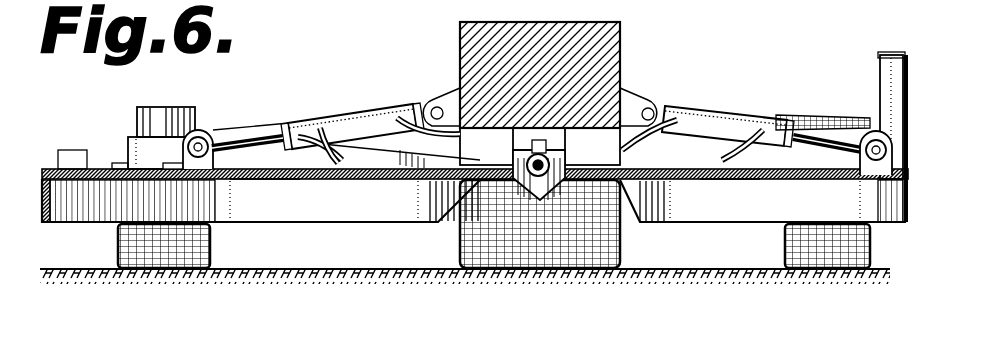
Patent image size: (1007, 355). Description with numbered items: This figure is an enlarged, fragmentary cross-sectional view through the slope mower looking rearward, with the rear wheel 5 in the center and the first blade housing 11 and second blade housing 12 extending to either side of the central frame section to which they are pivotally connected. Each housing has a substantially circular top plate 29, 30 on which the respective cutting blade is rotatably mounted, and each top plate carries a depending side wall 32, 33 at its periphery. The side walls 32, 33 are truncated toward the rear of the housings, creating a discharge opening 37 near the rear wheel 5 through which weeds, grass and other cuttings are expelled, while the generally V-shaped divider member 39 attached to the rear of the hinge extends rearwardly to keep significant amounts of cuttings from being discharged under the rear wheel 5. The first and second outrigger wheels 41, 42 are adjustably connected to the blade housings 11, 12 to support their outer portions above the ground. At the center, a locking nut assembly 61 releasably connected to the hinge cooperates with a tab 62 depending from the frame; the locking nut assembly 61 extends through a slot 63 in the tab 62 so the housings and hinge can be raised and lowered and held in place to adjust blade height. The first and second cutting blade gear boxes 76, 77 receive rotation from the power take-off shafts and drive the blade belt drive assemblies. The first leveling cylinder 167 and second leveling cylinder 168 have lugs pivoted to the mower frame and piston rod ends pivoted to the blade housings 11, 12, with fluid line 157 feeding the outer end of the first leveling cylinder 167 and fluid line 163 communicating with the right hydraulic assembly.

The rear wheel 5 is at (620, 258).
The first blade housing 11 is at (770, 216).
The second blade housing 12 is at (362, 220).
The top plate 29 is at (733, 180).
The top plate 30 is at (249, 181).
The depending side wall 32 is at (720, 218).
The depending side wall 33 is at (302, 220).
The discharge opening 37 is at (419, 210).
The divider member 39 is at (505, 215).
The first outrigger wheel 41 is at (866, 258).
The second outrigger wheel 42 is at (118, 246).
The locking nut assembly 61 is at (556, 164).
The tab 62 is at (513, 147).
The slot 63 is at (541, 143).
The first cutting blade gear box 76 is at (883, 82).
The second cutting blade gear box 77 is at (135, 121).
The fluid line 157 is at (738, 152).
The fluid line 163 is at (322, 152).
The first leveling cylinder 167 is at (693, 108).
The second leveling cylinder 168 is at (360, 112).